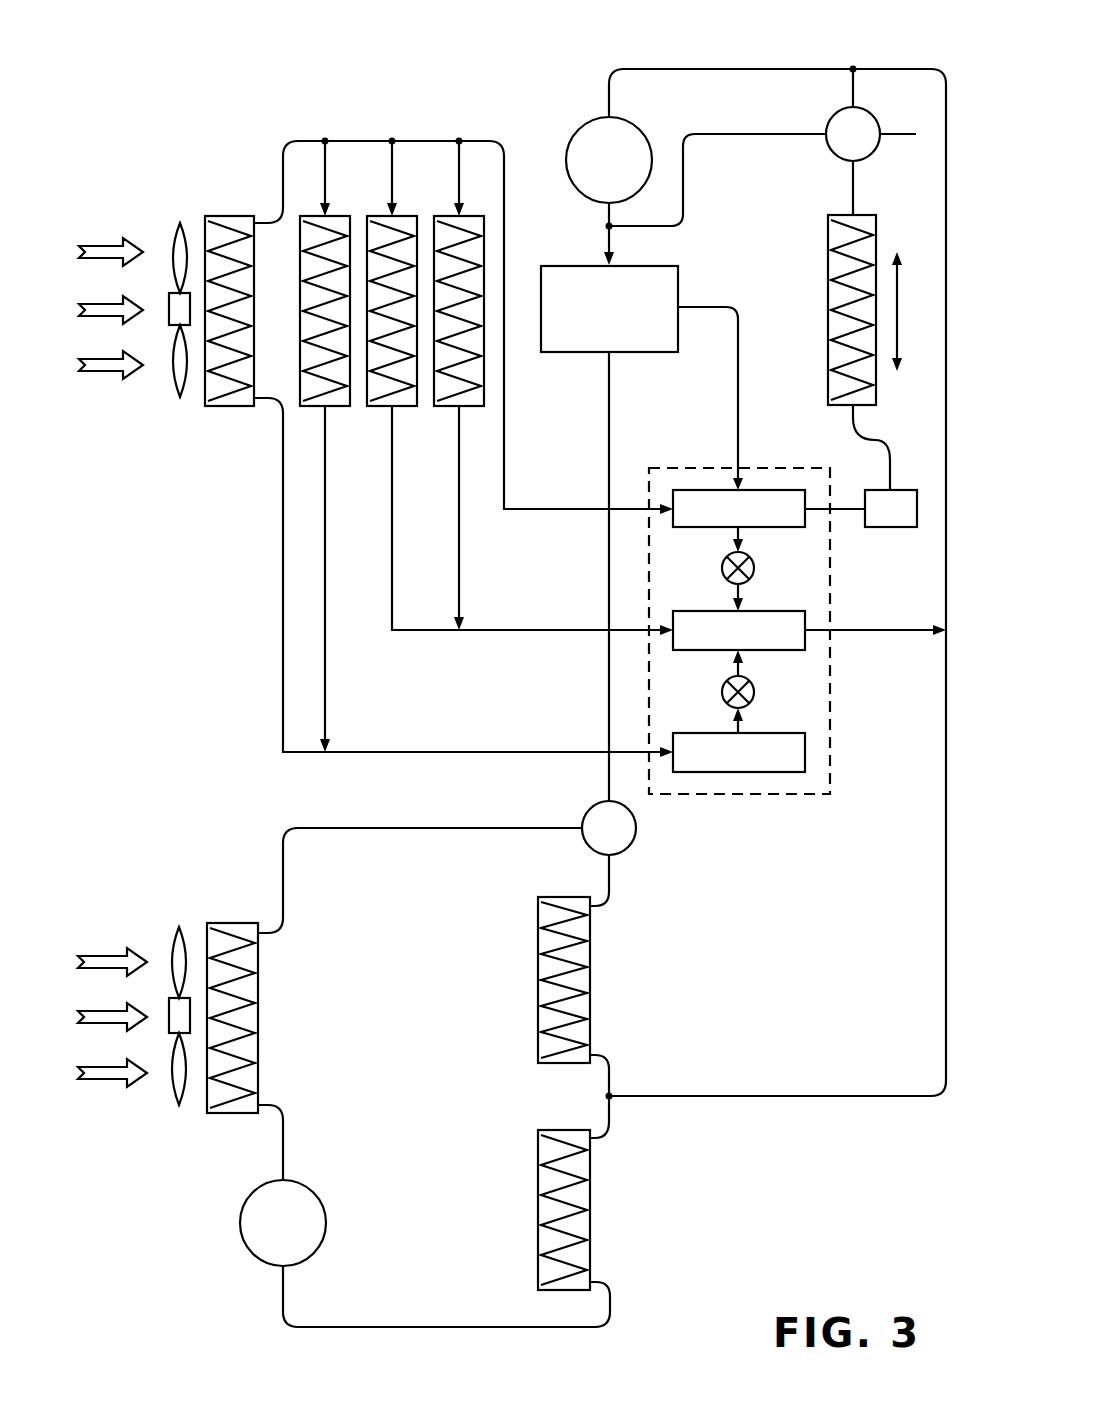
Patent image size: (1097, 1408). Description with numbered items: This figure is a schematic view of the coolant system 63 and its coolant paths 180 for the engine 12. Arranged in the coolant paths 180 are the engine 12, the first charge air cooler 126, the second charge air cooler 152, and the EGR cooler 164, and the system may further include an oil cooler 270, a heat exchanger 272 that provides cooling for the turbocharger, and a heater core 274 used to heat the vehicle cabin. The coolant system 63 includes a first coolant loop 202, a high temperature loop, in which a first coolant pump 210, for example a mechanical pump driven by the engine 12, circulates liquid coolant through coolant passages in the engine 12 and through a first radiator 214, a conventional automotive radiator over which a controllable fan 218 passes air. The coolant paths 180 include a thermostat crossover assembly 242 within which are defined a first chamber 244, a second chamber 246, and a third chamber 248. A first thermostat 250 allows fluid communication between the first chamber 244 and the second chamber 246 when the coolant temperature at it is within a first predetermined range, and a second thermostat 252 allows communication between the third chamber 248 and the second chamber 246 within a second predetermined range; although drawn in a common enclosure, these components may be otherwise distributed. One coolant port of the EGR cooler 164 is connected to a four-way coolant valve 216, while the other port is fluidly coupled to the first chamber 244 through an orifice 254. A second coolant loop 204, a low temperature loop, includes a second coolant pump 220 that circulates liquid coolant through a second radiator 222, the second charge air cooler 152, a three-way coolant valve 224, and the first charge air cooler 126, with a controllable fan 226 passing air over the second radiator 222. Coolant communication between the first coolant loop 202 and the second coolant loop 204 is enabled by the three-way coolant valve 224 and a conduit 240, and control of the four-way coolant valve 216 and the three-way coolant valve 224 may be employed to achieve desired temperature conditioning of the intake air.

The engine 12 is at (560, 266).
The coolant system 63 is at (234, 103).
The first charge air cooler 126 is at (590, 1268).
The second charge air cooler 152 is at (537, 915).
The EGR cooler 164 is at (828, 254).
The coolant paths 180 is at (281, 60).
The first coolant loop 202 is at (687, 69).
The second coolant loop 204 is at (345, 1327).
The first coolant pump 210 is at (587, 121).
The first radiator 214 is at (205, 217).
The four-way coolant valve 216 is at (835, 115).
The fan 218 is at (179, 226).
The second coolant pump 220 is at (248, 1252).
The second radiator 222 is at (207, 922).
The three-way coolant valve 224 is at (628, 848).
The fan 226 is at (178, 938).
The conduit 240 is at (783, 1096).
The thermostat crossover assembly 242 is at (785, 794).
The first chamber 244 is at (778, 490).
The second chamber 246 is at (790, 611).
The third chamber 248 is at (790, 733).
The first thermostat 250 is at (756, 566).
The second thermostat 252 is at (756, 690).
The orifice 254 is at (907, 490).
The oil cooler 270 is at (337, 210).
The heat exchanger 272 is at (405, 210).
The heater core 274 is at (474, 210).